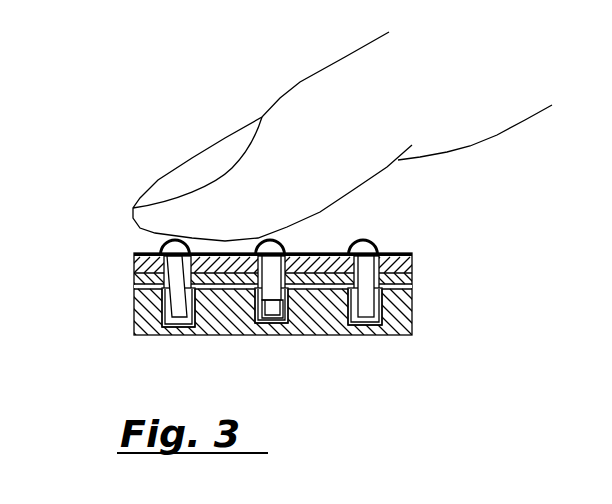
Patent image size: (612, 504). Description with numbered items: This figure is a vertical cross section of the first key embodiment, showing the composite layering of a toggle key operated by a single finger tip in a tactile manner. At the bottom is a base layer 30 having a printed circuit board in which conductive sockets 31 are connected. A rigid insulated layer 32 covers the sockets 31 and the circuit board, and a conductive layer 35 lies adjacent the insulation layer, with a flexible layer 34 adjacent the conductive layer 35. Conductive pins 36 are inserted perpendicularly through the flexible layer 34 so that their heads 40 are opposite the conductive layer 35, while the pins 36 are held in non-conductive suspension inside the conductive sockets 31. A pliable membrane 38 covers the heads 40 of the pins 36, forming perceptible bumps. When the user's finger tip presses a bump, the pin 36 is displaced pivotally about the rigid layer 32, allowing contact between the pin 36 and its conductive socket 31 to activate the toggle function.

The base layer 30 is at (412, 315).
The conductive sockets 31 is at (350, 328).
The rigid insulated layer 32 is at (412, 287).
The flexible layer 34 is at (412, 267).
The conductive layer 35 is at (135, 278).
The conductive pins 36 is at (167, 328).
The pliable membrane 38 is at (333, 250).
The heads 40 is at (377, 238).